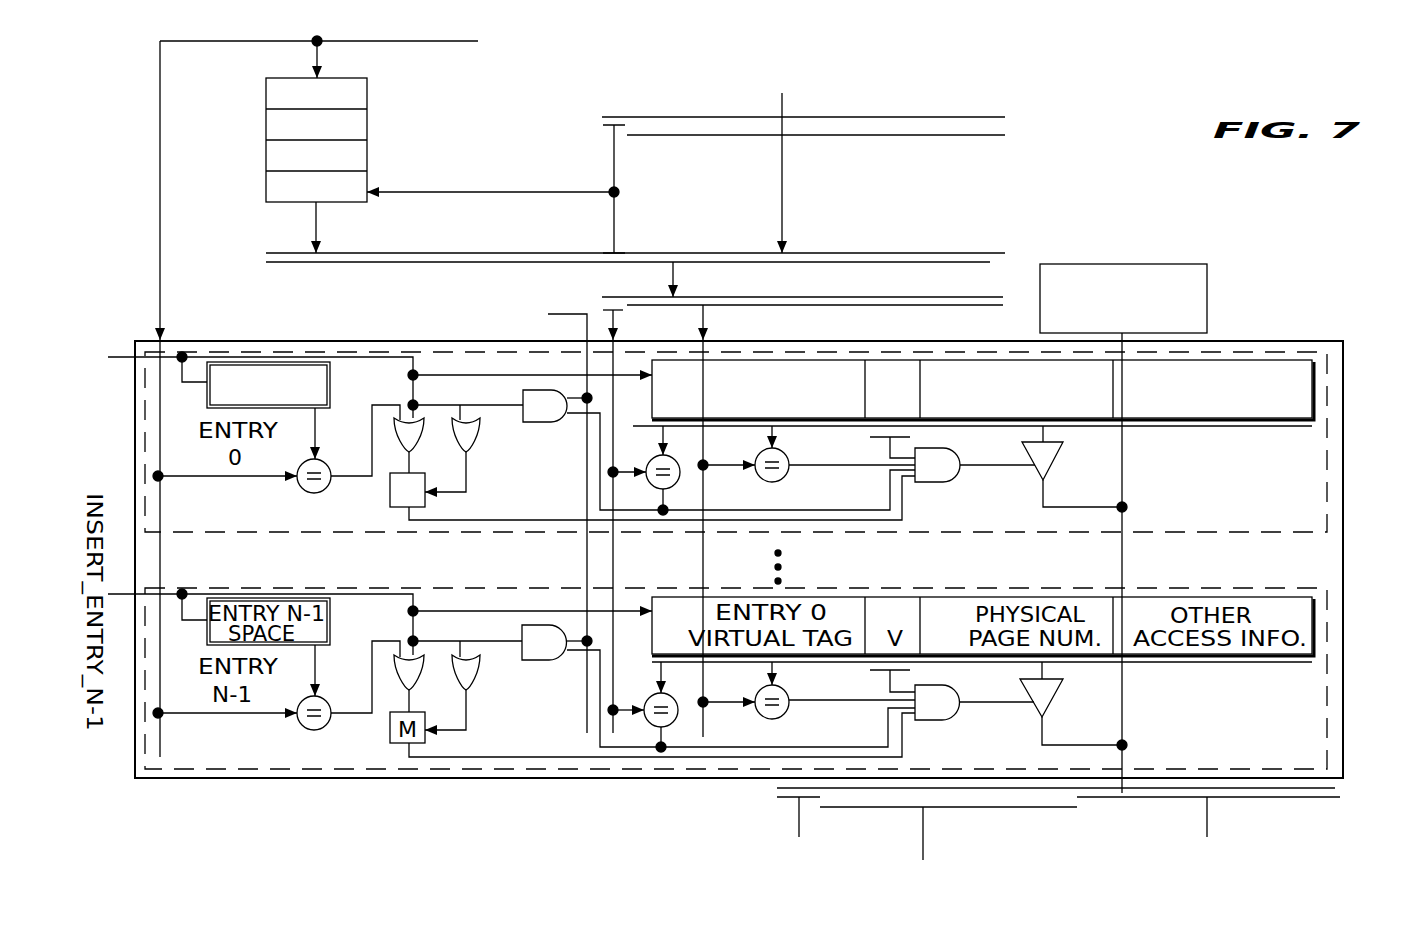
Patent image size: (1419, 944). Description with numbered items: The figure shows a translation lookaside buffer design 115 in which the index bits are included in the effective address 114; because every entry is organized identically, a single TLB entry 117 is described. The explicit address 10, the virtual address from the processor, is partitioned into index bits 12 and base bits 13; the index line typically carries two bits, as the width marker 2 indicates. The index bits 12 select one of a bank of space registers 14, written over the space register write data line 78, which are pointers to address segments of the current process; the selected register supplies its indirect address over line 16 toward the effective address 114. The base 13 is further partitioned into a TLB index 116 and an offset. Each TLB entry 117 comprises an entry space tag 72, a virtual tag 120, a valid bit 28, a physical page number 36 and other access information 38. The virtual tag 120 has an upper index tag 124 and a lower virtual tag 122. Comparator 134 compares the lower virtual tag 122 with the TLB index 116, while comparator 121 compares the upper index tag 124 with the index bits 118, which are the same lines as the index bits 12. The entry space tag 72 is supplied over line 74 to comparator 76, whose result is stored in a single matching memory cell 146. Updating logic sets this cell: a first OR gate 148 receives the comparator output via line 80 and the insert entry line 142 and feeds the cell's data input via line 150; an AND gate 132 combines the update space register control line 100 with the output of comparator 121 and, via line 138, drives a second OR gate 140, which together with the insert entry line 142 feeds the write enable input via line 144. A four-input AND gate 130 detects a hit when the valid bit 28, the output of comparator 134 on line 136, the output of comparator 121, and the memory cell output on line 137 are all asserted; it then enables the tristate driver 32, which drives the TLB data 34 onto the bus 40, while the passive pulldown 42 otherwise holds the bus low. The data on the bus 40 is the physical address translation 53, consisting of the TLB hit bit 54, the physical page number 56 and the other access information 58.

The index line 2 is at (622, 151).
The explicit address 10 is at (985, 117).
The index bits 12 is at (605, 125).
The base bits 13 is at (953, 135).
The space registers 14 is at (266, 140).
The indirect address output 16 is at (315, 208).
The valid bit 28 is at (895, 360).
The tristate driver 32 is at (1058, 460).
The TLB data 34 is at (1225, 426).
The physical page number 36 is at (1022, 360).
The other access information 38 is at (1262, 360).
The data bus 40 is at (1122, 515).
The passive pulldown 42 is at (1207, 297).
The physical address translation 53 is at (1335, 788).
The TLB hit bit 54 is at (799, 818).
The physical page number 56 is at (923, 830).
The other access information 58 is at (1207, 820).
The entry space tag 72 is at (222, 360).
The entry space output line 74 is at (317, 428).
The comparator 76 is at (298, 487).
The space register write data line 78 is at (412, 46).
The line 80 is at (380, 400).
The update space register control line 100 is at (566, 312).
The effective address 114 is at (1003, 262).
The TLB design 115 is at (1327, 340).
The TLB index 116 is at (850, 305).
The TLB entry 117 is at (1327, 503).
The index bits 118 is at (613, 312).
The virtual tag 120 is at (787, 418).
The comparator 121 is at (678, 483).
The lower virtual tag 122 is at (772, 432).
The upper index tag 124 is at (633, 427).
The four-input AND gate 130 is at (958, 448).
The AND gate 132 is at (548, 422).
The comparator 134 is at (784, 478).
The line 136 is at (838, 466).
The line 137 is at (902, 497).
The line 138 is at (512, 374).
The second OR gate 140 is at (480, 437).
The insert entry line 142 is at (118, 355).
The line 144 is at (455, 492).
The matching memory cell 146 is at (388, 495).
The first OR gate 148 is at (416, 407).
The line 150 is at (409, 460).